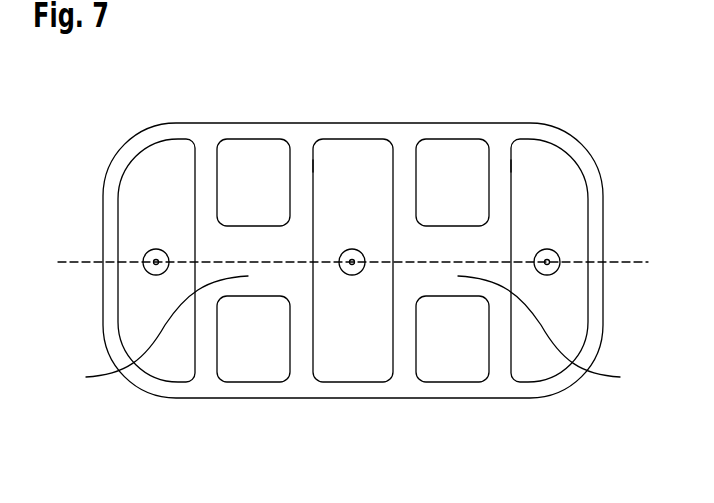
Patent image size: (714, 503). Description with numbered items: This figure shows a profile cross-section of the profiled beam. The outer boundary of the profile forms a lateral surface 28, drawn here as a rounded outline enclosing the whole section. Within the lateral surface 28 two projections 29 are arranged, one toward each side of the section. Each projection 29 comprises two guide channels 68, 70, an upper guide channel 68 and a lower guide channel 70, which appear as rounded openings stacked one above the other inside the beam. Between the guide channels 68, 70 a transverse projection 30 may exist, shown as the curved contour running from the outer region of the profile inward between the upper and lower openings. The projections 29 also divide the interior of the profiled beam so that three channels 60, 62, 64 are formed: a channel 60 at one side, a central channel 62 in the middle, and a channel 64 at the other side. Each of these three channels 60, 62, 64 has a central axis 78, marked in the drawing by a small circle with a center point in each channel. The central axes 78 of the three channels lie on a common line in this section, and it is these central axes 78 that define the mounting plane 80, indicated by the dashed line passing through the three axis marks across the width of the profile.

The lateral surface 28 is at (155, 126).
The projection 29 is at (314, 167).
The transverse projection 30 is at (353, 334).
The channel 60 is at (155, 174).
The channel 62 is at (370, 152).
The channel 64 is at (556, 176).
The guide channel 68 is at (257, 152).
The guide channel 70 is at (257, 370).
The central axis 78 is at (156, 262).
The mounting plane 80 is at (73, 262).